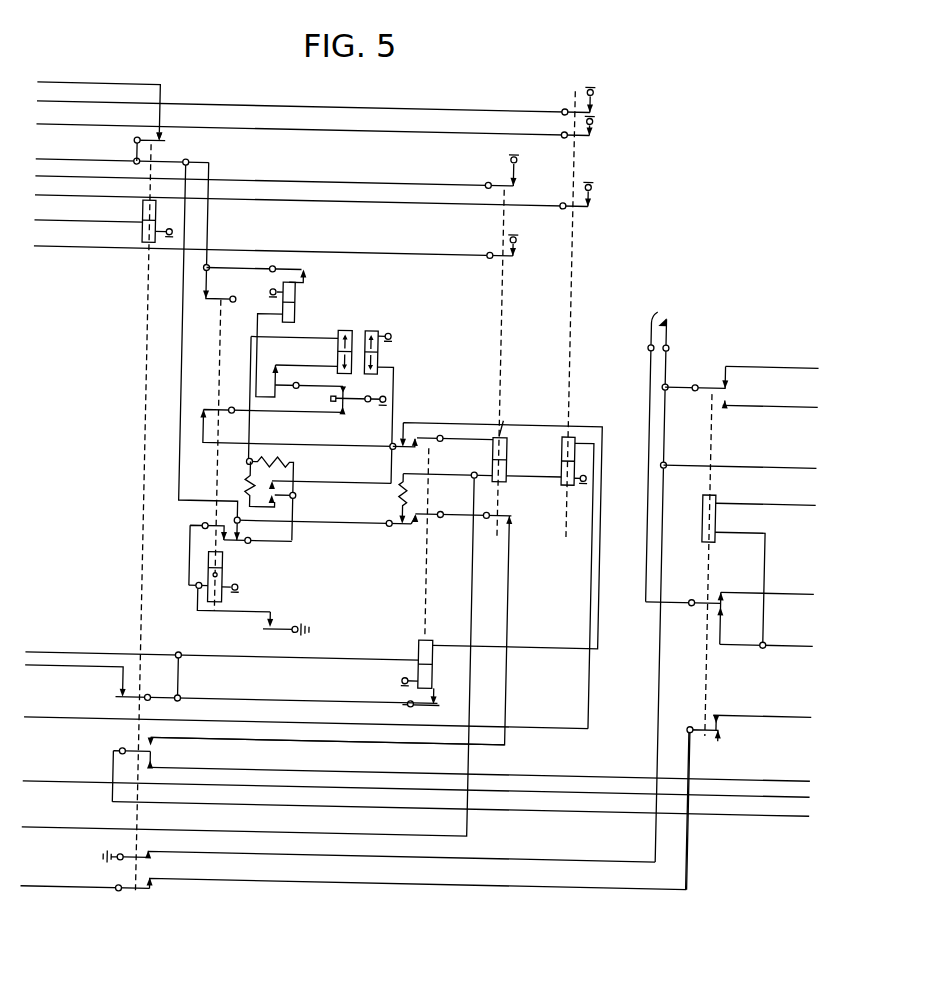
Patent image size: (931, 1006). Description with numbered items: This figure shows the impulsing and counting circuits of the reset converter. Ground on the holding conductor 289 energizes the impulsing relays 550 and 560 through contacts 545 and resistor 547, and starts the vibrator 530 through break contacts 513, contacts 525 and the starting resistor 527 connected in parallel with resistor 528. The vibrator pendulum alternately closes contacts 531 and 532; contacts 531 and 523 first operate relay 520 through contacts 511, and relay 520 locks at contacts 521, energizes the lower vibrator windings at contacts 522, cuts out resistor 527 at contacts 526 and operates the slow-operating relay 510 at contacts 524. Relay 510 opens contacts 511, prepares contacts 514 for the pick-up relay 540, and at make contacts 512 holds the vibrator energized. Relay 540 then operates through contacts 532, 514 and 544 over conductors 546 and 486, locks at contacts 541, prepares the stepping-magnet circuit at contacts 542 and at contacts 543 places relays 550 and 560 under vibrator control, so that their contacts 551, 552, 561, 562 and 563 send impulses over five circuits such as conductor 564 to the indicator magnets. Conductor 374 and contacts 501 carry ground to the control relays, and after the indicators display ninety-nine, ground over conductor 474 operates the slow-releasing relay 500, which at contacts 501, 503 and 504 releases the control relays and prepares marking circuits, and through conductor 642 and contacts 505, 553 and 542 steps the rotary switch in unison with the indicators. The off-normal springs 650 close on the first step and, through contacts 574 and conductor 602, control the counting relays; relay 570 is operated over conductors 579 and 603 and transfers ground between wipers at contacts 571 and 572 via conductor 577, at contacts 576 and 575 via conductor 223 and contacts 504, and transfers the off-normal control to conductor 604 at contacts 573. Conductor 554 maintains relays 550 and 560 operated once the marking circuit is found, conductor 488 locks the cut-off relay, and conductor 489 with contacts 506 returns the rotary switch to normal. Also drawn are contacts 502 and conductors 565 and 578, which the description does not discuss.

The conductor 374 is at (81, 78).
The conductor 564 is at (81, 98).
The holding conductor 289 is at (81, 158).
The conductor 474 is at (81, 218).
The slow-releasing relay 500 is at (143, 238).
The contacts 501 is at (168, 138).
The relay contact 502 is at (153, 687).
The contacts 503 is at (170, 851).
The contacts 504 is at (172, 878).
The contacts 505 is at (158, 739).
The contacts 506 is at (166, 750).
The slow-operating relay 510 is at (234, 576).
The contacts 511 is at (216, 292).
The make contacts 512 is at (230, 532).
The break contacts 513 is at (255, 538).
The contacts 514 is at (200, 416).
The relay 520 is at (300, 299).
The contacts 521 is at (312, 264).
The contacts 522 is at (285, 362).
The contacts 523 is at (286, 388).
The contacts 524 is at (294, 620).
The contacts 525 is at (302, 487).
The contacts 526 is at (302, 500).
The starting resistor 527 is at (255, 480).
The resistor 528 is at (285, 455).
The vibrator 530 is at (384, 356).
The contacts 531 is at (378, 384).
The contacts 532 is at (349, 406).
The pick-up relay 540 is at (436, 632).
The contacts 541 is at (452, 688).
The contacts 542 is at (439, 511).
The contacts 543 is at (440, 433).
The contacts 544 is at (410, 432).
The contacts 545 is at (403, 513).
The conductor 546 is at (84, 646).
The resistor 547 is at (408, 488).
The impulsing relay 550 is at (517, 457).
The contacts 551 is at (517, 180).
The contacts 552 is at (521, 245).
The contacts 553 is at (521, 513).
The conductor 554 is at (87, 818).
The impulsing relay 560 is at (578, 476).
The contacts 561 is at (597, 97).
The contacts 562 is at (597, 121).
The contacts 563 is at (597, 193).
The conductor 565 is at (783, 691).
The relay 570 is at (724, 503).
The contacts 571 is at (723, 363).
The contacts 572 is at (718, 378).
The contacts 573 is at (728, 578).
The contacts 574 is at (726, 590).
The contacts 575 is at (718, 708).
The contacts 576 is at (734, 719).
The conductor 577 is at (781, 340).
The conductor 578 is at (782, 379).
The conductor 579 is at (783, 479).
The conductor 602 is at (820, 624).
The conductor 603 is at (783, 441).
The conductor 604 is at (820, 572).
The conductor 642 is at (781, 798).
The off-normal springs 650 is at (714, 573).
The conductor 486 is at (84, 708).
The conductor 488 is at (86, 773).
The conductor 489 is at (780, 758).
The conductor 223 is at (88, 878).